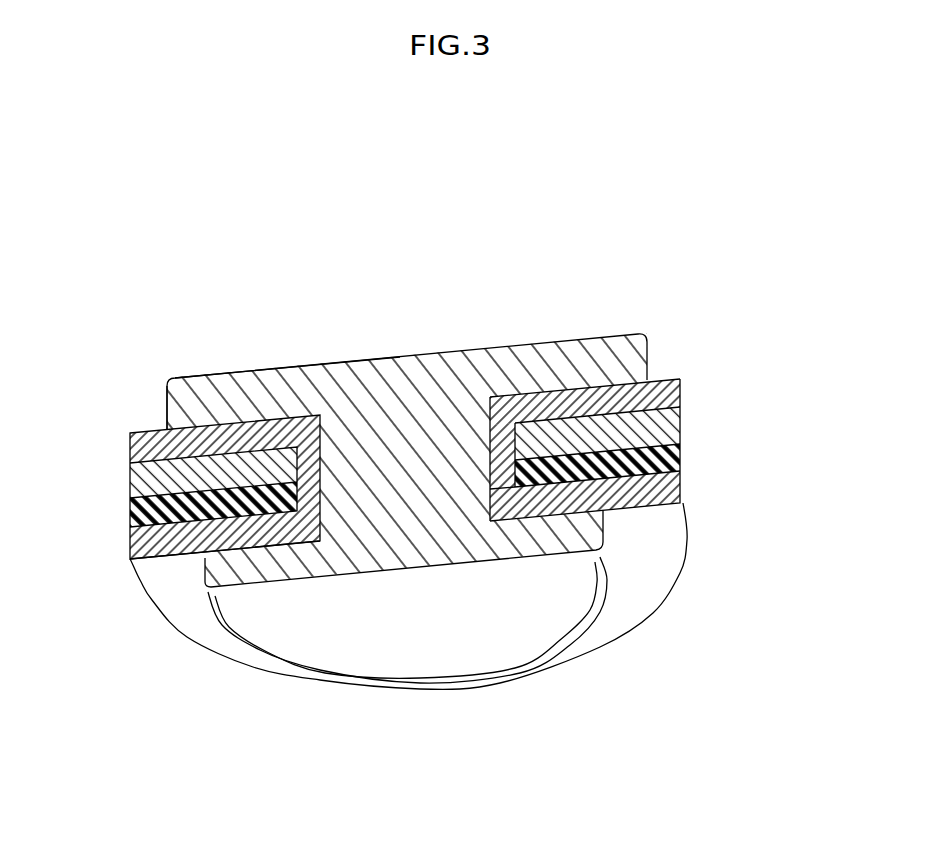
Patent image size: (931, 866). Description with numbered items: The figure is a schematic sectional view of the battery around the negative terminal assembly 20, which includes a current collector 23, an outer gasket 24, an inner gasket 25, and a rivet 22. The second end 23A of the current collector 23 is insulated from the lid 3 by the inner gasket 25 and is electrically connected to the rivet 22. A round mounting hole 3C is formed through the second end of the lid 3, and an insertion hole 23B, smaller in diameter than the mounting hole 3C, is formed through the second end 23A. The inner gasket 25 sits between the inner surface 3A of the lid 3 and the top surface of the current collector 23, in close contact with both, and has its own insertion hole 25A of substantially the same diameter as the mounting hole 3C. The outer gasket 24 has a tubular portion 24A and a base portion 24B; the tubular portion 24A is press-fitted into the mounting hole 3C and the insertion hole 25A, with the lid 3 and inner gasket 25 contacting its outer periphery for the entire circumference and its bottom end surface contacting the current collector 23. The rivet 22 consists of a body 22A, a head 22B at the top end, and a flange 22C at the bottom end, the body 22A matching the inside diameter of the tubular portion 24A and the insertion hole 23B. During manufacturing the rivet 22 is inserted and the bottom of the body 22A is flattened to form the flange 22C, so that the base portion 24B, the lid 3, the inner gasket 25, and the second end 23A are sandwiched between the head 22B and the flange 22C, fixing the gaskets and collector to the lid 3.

The negative terminal assembly 20 is at (411, 183).
The rivet 22 is at (402, 263).
The body 22A is at (337, 472).
The head 22B is at (275, 387).
The flange 22C is at (313, 560).
The outer gasket 24 is at (567, 361).
The tubular portion 24A is at (489, 440).
The base portion 24B is at (535, 400).
The lid 3 is at (653, 423).
The inner surface 3A is at (653, 460).
The mounting hole 3C is at (513, 448).
The current collector 23 is at (653, 570).
The second end 23A is at (653, 493).
The insertion hole 23B is at (492, 505).
The inner gasket 25 is at (130, 520).
The insertion hole 25A is at (305, 516).